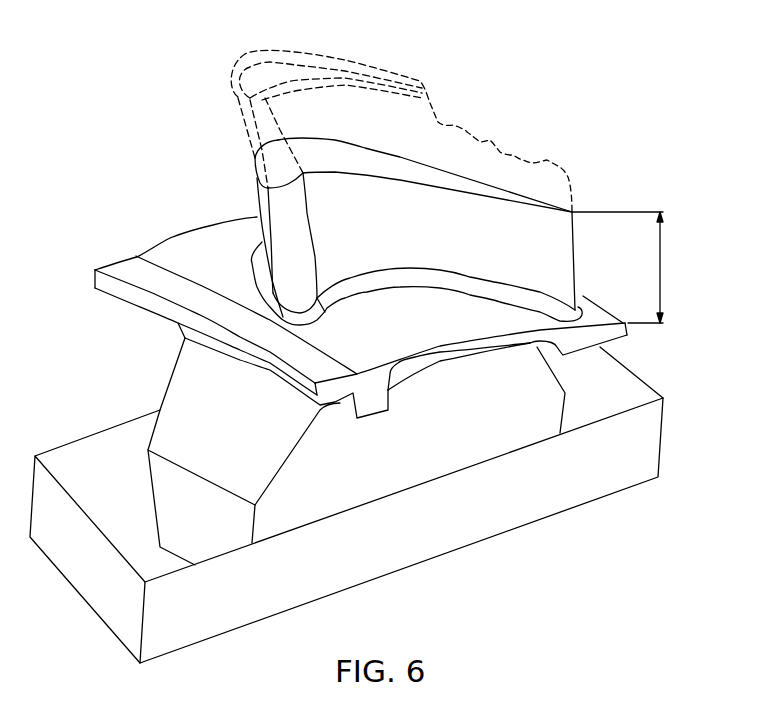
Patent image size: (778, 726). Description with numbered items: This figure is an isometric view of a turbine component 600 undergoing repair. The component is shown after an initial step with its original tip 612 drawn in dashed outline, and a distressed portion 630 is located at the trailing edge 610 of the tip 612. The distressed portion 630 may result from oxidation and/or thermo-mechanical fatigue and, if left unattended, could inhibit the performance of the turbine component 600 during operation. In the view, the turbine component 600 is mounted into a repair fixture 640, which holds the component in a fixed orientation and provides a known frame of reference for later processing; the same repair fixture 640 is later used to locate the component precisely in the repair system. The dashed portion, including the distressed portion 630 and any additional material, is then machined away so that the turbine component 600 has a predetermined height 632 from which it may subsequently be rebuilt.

The turbine component 600 is at (407, 295).
The trailing edge 610 is at (571, 254).
The tip 612 is at (380, 69).
The distressed portion 630 is at (450, 123).
The predetermined height 632 is at (665, 263).
The repair fixture 640 is at (572, 501).